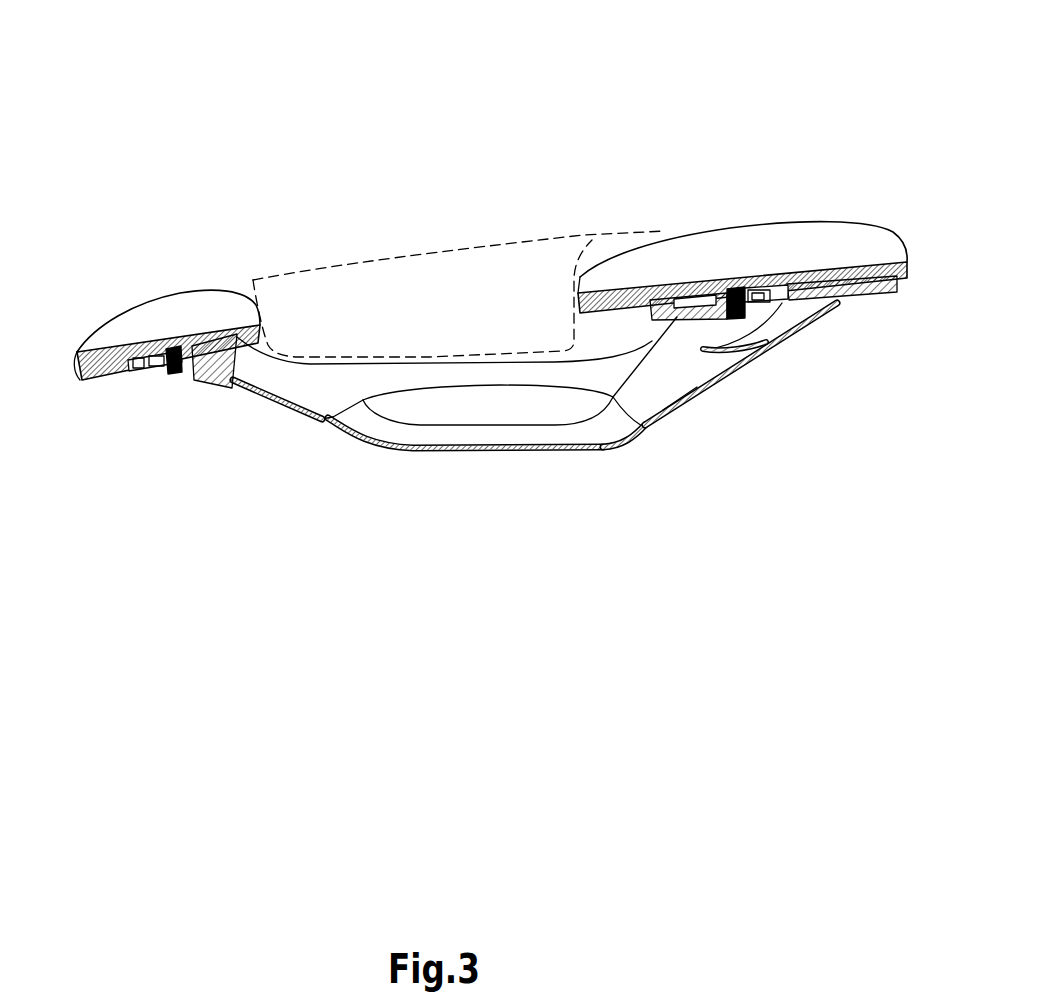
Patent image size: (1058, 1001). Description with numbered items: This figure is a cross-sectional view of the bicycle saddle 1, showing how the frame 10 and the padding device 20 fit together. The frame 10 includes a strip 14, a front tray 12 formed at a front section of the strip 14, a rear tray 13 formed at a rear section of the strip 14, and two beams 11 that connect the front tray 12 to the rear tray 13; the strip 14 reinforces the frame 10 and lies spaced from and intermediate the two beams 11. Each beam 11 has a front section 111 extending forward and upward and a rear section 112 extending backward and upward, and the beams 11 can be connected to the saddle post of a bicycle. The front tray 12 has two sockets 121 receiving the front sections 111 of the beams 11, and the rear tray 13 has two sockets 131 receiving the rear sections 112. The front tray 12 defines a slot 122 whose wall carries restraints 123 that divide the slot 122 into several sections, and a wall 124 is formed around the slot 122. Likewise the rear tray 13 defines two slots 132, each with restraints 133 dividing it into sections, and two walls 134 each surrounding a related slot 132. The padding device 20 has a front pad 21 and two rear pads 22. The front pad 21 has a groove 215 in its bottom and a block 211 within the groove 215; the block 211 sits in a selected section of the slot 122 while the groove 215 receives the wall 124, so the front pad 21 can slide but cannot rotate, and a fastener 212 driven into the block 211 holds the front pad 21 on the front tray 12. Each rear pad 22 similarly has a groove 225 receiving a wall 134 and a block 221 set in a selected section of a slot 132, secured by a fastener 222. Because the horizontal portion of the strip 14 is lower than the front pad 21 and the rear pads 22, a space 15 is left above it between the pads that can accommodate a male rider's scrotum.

The seat assembly 1 is at (486, 108).
The frame 10 is at (453, 520).
The beams 11 is at (497, 437).
The front tray 12 is at (240, 369).
The rear tray 13 is at (760, 351).
The strip 14 is at (560, 370).
The space 15 is at (408, 238).
The padding device 20 is at (742, 230).
The front pad 21 is at (165, 326).
The rear pads 22 is at (833, 228).
The front section 111 is at (372, 426).
The rear section 112 is at (625, 428).
The sockets 121 is at (330, 394).
The slot 122 is at (127, 362).
The restraints 123 is at (153, 368).
The wall 124 is at (128, 374).
The sockets 131 is at (662, 425).
The slots 132 is at (760, 292).
The restraints 133 is at (768, 306).
The walls 134 is at (833, 304).
The block 211 is at (163, 352).
The fastener 212 is at (183, 371).
The groove 215 is at (207, 334).
The block 221 is at (723, 292).
The fastener 222 is at (733, 303).
The groove 225 is at (693, 288).